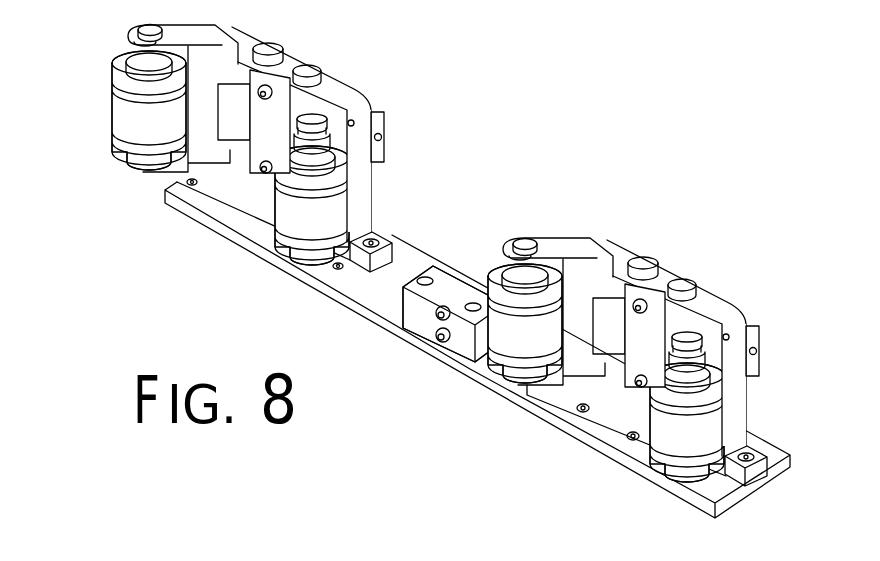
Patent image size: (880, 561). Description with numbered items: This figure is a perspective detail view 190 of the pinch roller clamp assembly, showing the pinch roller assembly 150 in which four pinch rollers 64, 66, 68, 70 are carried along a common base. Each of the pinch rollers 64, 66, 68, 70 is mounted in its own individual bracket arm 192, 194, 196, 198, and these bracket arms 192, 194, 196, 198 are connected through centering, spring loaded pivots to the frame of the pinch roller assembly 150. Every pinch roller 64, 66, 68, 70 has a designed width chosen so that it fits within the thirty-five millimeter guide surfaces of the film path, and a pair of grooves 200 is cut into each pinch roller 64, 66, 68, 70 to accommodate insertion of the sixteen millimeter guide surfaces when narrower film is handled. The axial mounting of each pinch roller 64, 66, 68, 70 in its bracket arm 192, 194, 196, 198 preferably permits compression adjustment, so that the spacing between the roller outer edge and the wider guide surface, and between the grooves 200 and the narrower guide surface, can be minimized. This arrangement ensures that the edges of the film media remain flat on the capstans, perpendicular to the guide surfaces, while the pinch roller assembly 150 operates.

The pinch roller assembly 150 is at (374, 316).
The detail view 190 is at (599, 131).
The bracket arm 192 is at (204, 160).
The bracket arm 194 is at (338, 89).
The bracket arm 196 is at (573, 375).
The bracket arm 198 is at (693, 317).
The pinch roller 64 is at (122, 143).
The pinch roller 66 is at (260, 248).
The pinch roller 68 is at (503, 363).
The pinch roller 70 is at (668, 457).
The grooves 200 is at (113, 124).